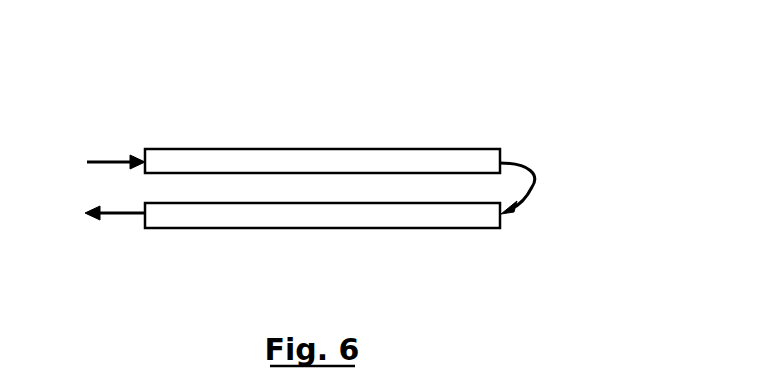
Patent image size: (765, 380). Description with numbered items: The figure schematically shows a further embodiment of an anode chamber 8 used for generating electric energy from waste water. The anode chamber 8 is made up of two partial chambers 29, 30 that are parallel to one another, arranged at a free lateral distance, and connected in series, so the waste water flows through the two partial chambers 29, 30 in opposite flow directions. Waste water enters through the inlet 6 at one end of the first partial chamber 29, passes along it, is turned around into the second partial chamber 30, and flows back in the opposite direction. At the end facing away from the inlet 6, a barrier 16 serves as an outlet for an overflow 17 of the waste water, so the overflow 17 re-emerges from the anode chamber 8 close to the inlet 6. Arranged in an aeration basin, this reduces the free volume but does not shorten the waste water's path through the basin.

The inlet 6 is at (112, 160).
The anode chamber 8 is at (340, 175).
The barrier 16 is at (145, 218).
The overflow 17 is at (116, 216).
The partial chamber 29 is at (293, 163).
The partial chamber 30 is at (417, 213).